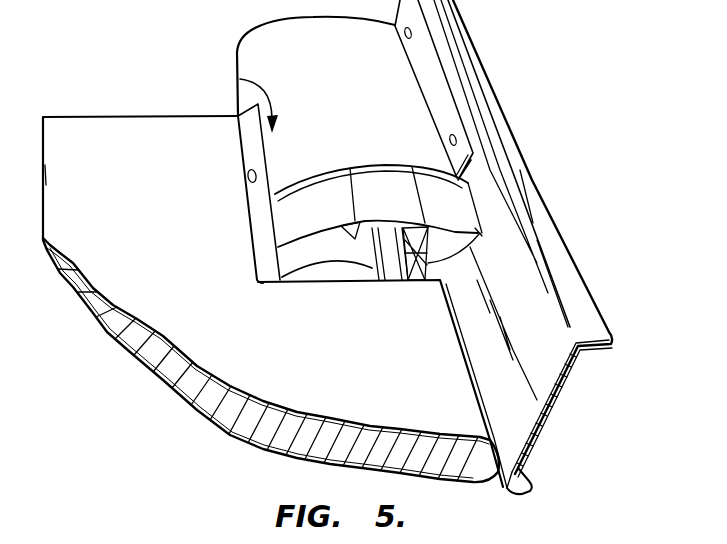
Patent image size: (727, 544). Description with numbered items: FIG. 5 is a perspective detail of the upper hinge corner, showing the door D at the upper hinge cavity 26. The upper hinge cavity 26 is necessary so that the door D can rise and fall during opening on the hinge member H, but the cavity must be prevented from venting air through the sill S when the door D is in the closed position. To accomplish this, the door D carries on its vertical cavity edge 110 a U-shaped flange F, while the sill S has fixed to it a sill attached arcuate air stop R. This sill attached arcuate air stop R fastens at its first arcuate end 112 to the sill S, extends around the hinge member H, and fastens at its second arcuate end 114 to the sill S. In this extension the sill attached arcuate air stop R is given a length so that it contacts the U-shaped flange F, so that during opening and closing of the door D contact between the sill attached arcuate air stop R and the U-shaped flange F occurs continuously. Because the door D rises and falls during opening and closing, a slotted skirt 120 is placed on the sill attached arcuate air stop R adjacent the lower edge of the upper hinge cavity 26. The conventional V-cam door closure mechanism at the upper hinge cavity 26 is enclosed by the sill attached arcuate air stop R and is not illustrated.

The upper hinge cavity 26 is at (240, 79).
The vertical cavity edge 110 is at (245, 173).
The first arcuate end 112 is at (436, 103).
The second arcuate end 114 is at (430, 264).
The slotted skirt 120 is at (350, 217).
The sill attached arcuate air stop R is at (373, 110).
The U-shaped flange F is at (262, 210).
The door D is at (267, 344).
The hinge member H is at (370, 265).
The sill S is at (543, 193).